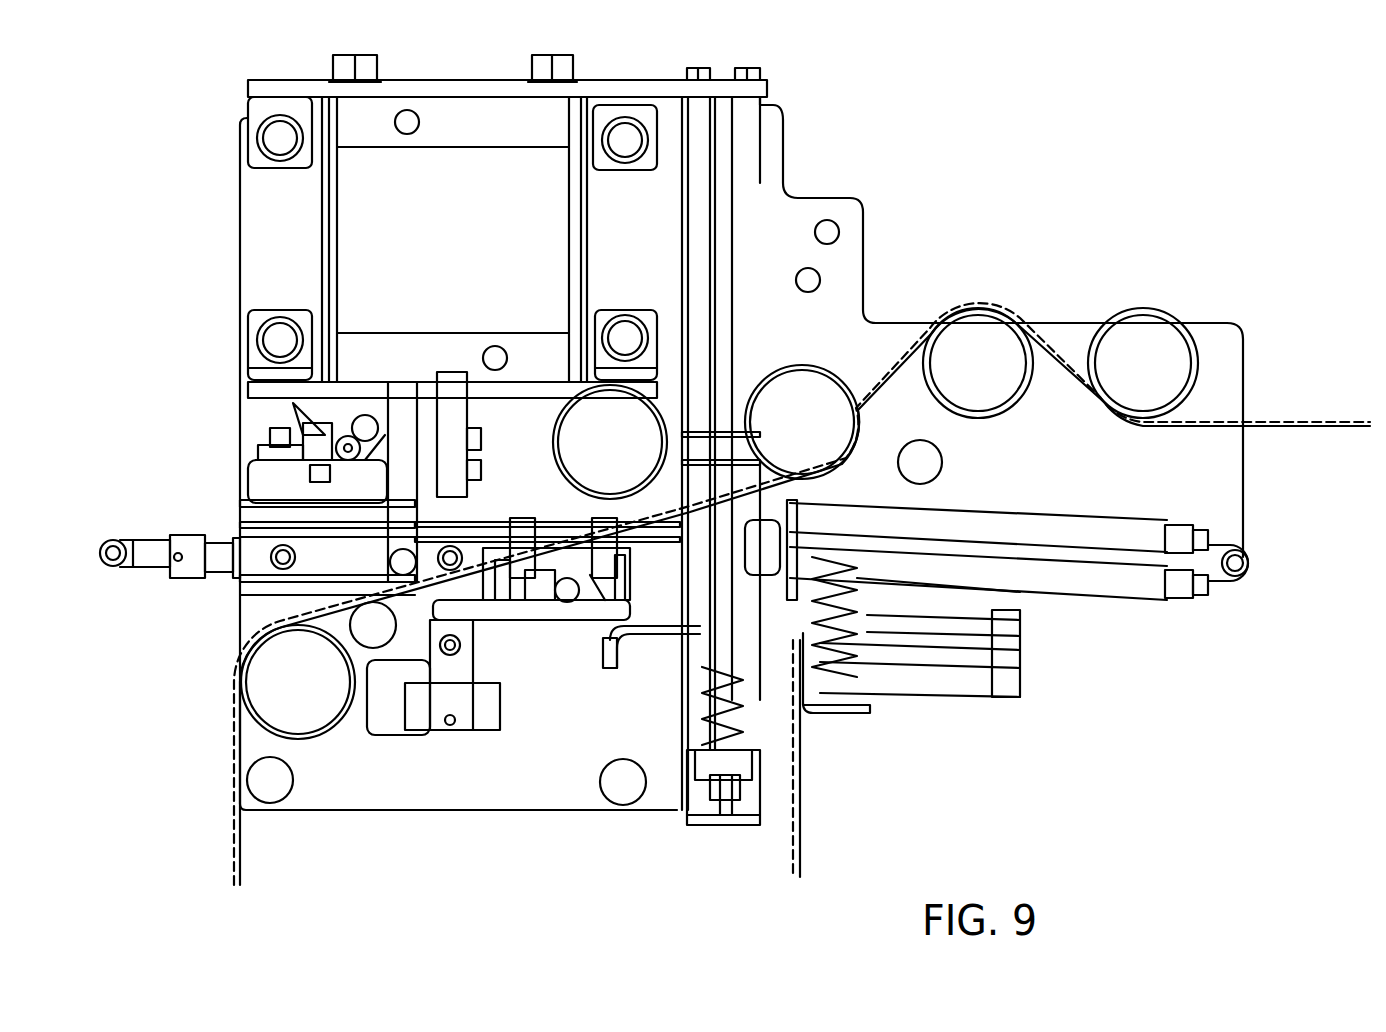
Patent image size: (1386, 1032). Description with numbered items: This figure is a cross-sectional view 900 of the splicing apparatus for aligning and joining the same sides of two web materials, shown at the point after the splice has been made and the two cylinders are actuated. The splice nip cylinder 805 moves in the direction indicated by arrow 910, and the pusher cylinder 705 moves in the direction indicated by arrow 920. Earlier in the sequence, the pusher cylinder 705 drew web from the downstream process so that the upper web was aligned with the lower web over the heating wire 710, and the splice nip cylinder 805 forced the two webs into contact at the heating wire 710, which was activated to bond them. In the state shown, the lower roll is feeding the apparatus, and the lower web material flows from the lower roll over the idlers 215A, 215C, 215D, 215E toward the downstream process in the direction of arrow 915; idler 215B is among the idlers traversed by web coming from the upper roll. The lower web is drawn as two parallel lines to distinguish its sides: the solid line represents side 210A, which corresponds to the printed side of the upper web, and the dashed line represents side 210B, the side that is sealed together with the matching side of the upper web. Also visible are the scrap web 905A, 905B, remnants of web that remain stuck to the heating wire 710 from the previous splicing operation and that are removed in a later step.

The cross-sectional view 900 is at (671, 432).
The splice nip cylinder 805 is at (474, 202).
The arrow 910 is at (436, 193).
The idler 215A is at (328, 693).
The idler 215B is at (639, 452).
The idler 215C is at (828, 433).
The idler 215D is at (1007, 375).
The idler 215E is at (1173, 375).
The lower web material side 210A is at (1313, 430).
The lower web material side 210B is at (1316, 420).
The scrap web 905A is at (802, 852).
The scrap web 905B is at (790, 852).
The arrow 915 is at (1347, 350).
The arrow 920 is at (1347, 563).
The pusher cylinder 705 is at (1119, 584).
The heating wire 710 is at (462, 630).